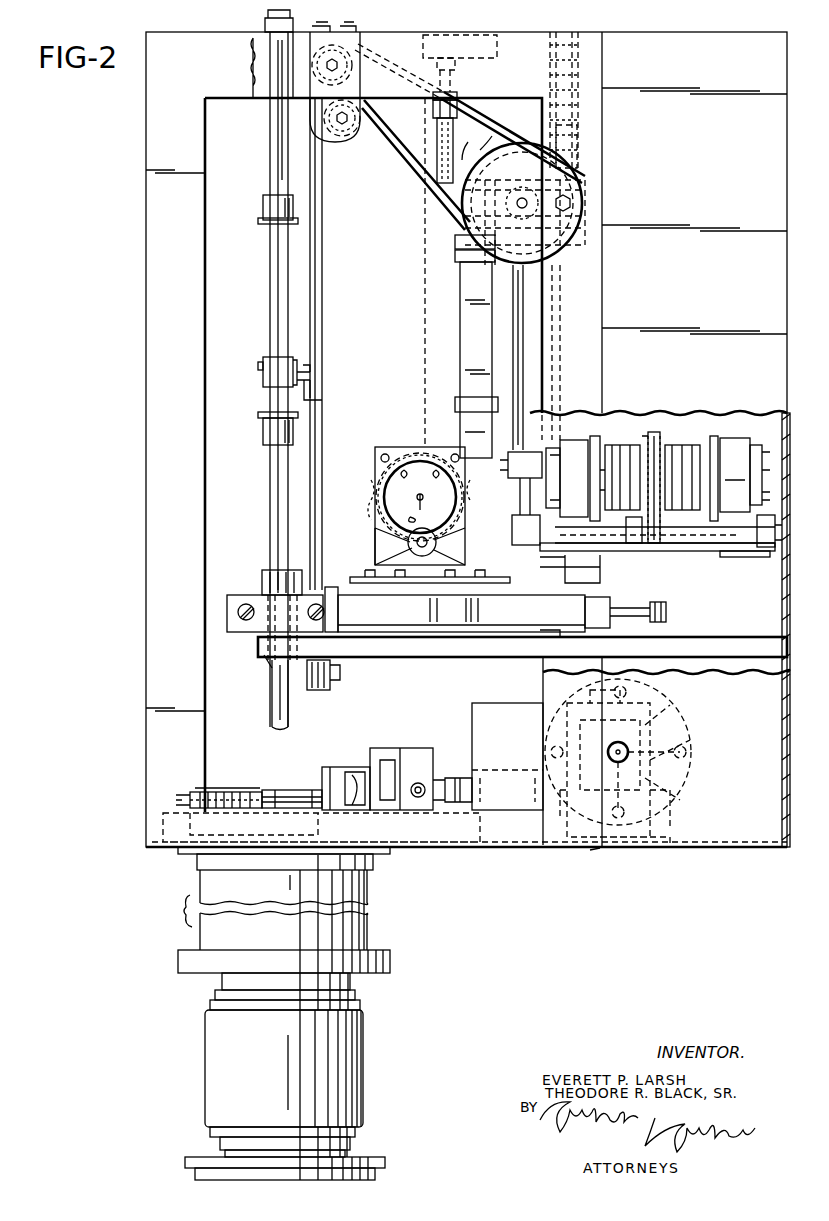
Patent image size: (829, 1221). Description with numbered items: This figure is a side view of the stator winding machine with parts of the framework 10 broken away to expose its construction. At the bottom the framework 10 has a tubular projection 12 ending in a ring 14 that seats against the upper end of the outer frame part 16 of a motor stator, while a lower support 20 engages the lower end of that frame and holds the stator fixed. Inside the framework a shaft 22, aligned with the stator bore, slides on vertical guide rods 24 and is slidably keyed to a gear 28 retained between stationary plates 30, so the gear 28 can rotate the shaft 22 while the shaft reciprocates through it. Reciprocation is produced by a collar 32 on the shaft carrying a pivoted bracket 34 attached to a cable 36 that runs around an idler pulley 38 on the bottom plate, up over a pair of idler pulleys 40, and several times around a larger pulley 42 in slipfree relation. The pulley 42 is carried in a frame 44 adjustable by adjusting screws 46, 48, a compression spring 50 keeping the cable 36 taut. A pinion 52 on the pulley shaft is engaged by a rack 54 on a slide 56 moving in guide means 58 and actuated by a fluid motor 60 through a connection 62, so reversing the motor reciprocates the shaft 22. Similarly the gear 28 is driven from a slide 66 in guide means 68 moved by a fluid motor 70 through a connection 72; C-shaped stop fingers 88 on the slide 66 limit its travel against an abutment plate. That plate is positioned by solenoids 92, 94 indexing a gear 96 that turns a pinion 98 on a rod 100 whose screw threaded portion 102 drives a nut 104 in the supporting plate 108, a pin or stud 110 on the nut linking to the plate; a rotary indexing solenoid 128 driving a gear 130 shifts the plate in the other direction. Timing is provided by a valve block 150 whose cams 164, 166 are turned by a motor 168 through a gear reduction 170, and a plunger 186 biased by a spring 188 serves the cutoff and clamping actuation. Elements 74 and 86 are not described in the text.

The framework 10 is at (160, 742).
The tubular projection 12 is at (355, 901).
The ring 14 is at (385, 962).
The outer frame part 16 is at (340, 1047).
The lower support 20 is at (362, 1152).
The shaft 22 is at (293, 719).
The vertical guide rods 24 is at (270, 275).
The gear 28 is at (248, 645).
The stationary plates 30 is at (262, 580).
The collar 32 is at (270, 365).
The bracket 34 is at (312, 378).
The cable 36 is at (322, 296).
The idler pulley 38 is at (330, 685).
The idler pulleys 40 is at (339, 129).
The pulley 42 is at (450, 215).
The frame 44 is at (455, 125).
The adjusting screw 46 is at (433, 110).
The adjusting screw 48 is at (578, 110).
The compression spring 50 is at (578, 58).
The pinion 52 is at (585, 180).
The rack 54 is at (482, 140).
The slide 56 is at (462, 158).
The guide means 58 is at (455, 258).
The fluid motor 60 is at (530, 320).
The connection 62 is at (500, 530).
The slide 66 is at (408, 620).
The guide means 68 is at (333, 588).
The fluid motor 70 is at (340, 640).
The connection 72 is at (670, 608).
The gear housing 74 is at (420, 497).
The collar 86 is at (298, 432).
The stop fingers 88 is at (358, 572).
The solenoid 92 is at (578, 440).
The solenoid 94 is at (735, 440).
The gear 96 is at (650, 432).
The pinion 98 is at (660, 551).
The rod 100 is at (735, 550).
The screw threaded portion 102 is at (583, 555).
The nut 104 is at (490, 590).
The supporting plate 108 is at (668, 558).
The pin or stud 110 is at (452, 609).
The rotary indexing solenoid 128 is at (410, 450).
The gear 130 is at (372, 492).
The valve block 150 is at (410, 770).
The cam 164 is at (344, 766).
The cam 166 is at (470, 745).
The motor 168 is at (688, 738).
The gear reduction 170 is at (602, 848).
The plunger 186 is at (282, 790).
The spring 188 is at (240, 790).